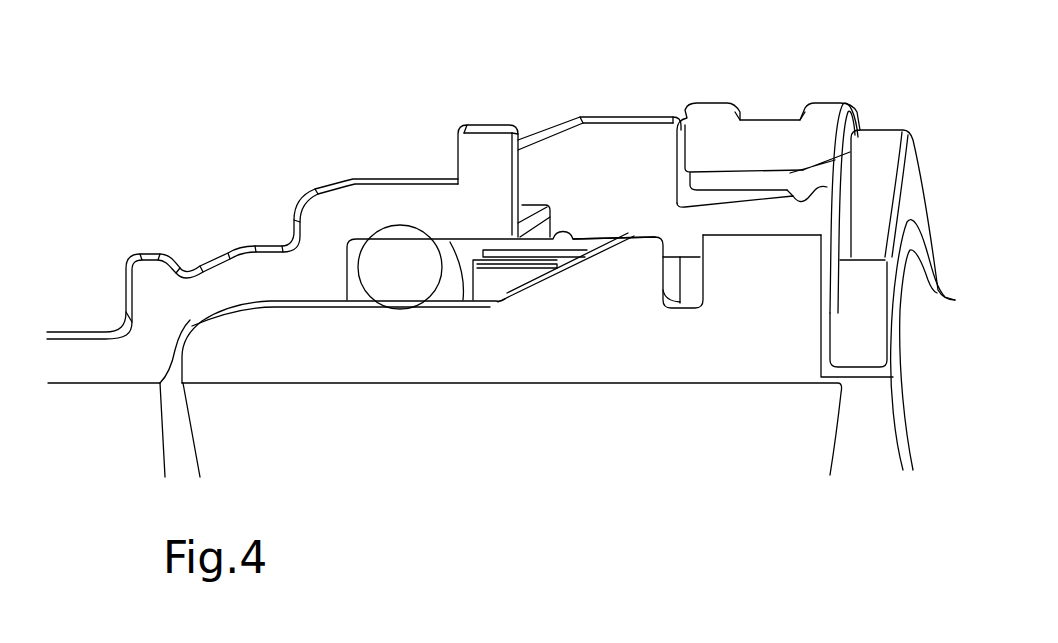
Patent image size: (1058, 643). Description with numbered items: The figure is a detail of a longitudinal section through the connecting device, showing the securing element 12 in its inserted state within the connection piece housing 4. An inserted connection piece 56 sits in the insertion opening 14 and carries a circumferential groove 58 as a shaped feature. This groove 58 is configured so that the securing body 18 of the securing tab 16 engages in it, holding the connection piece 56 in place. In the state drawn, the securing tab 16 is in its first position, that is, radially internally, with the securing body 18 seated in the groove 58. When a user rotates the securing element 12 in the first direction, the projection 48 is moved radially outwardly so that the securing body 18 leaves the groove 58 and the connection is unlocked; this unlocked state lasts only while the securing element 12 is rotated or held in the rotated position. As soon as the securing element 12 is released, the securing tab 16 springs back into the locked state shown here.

The connection piece housing 4 is at (70, 348).
The securing element 12 is at (877, 143).
The insertion opening 14 is at (857, 367).
The securing tab 16 is at (737, 213).
The securing body 18 is at (683, 242).
The projection 48 is at (600, 143).
The inserted connection piece 56 is at (615, 365).
The circumferential groove 58 is at (698, 295).